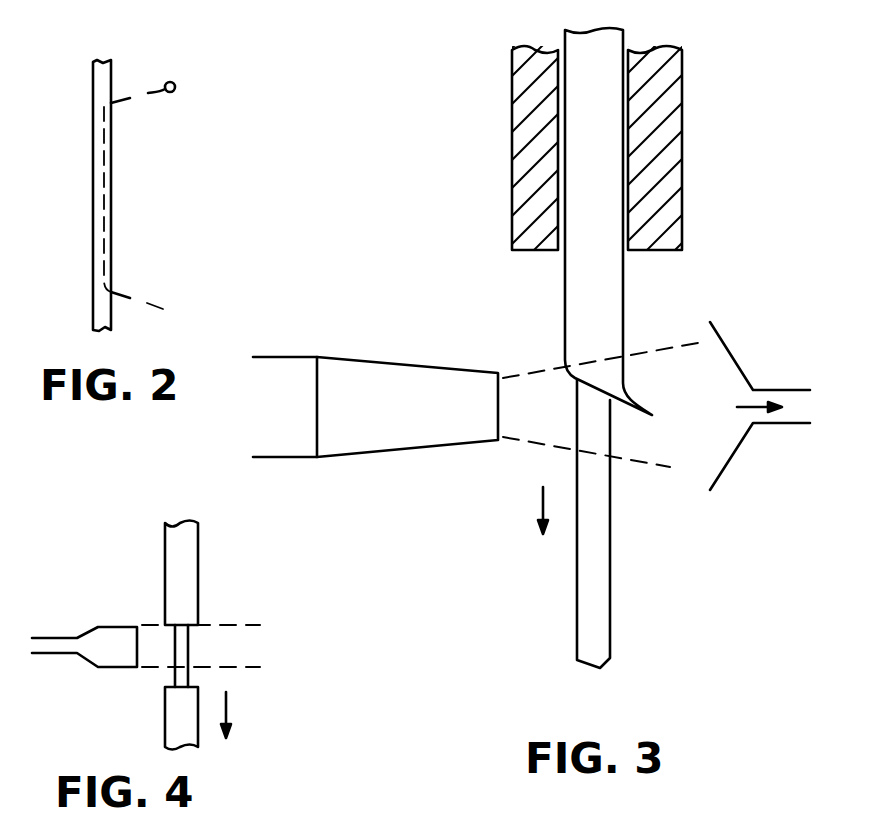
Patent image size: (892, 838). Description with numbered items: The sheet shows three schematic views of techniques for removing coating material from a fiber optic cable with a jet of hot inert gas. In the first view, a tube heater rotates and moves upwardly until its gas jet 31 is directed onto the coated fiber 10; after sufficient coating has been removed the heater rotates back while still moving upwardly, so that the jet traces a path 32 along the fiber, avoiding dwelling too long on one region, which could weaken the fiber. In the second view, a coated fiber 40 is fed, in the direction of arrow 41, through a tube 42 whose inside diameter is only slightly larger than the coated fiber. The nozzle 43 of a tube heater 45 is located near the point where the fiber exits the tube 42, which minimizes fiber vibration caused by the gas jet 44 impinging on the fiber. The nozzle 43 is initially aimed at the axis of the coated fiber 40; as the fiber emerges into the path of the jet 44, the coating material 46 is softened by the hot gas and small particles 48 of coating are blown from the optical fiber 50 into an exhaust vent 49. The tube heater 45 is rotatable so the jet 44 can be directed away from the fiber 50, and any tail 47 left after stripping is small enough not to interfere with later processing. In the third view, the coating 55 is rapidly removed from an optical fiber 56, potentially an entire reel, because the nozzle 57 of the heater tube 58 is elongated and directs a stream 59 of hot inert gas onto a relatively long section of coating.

In FIG. 2, the coated fiber 10 is at (110, 317).
In FIG. 2, the gas jet 31 is at (175, 89).
In FIG. 2, the path 32 is at (113, 103).
In FIG. 3, the coated fiber 40 is at (558, 298).
In FIG. 3, the arrow 41 is at (542, 506).
In FIG. 3, the tube 42 is at (517, 193).
In FIG. 3, the nozzle 43 is at (450, 447).
In FIG. 3, the gas jet 44 is at (559, 431).
In FIG. 3, the tube heater 45 is at (302, 458).
In FIG. 3, the coating material 46 is at (616, 298).
In FIG. 3, the tail 47 is at (630, 397).
In FIG. 3, the particles 48 is at (722, 444).
In FIG. 3, the exhaust vent 49 is at (733, 453).
In FIG. 3, the optical fiber 50 is at (604, 560).
In FIG. 4, the coating 55 is at (182, 542).
In FIG. 4, the optical fiber 56 is at (190, 653).
In FIG. 4, the nozzle 57 is at (143, 657).
In FIG. 4, the heater tube 58 is at (92, 637).
In FIG. 4, the stream 59 is at (152, 637).